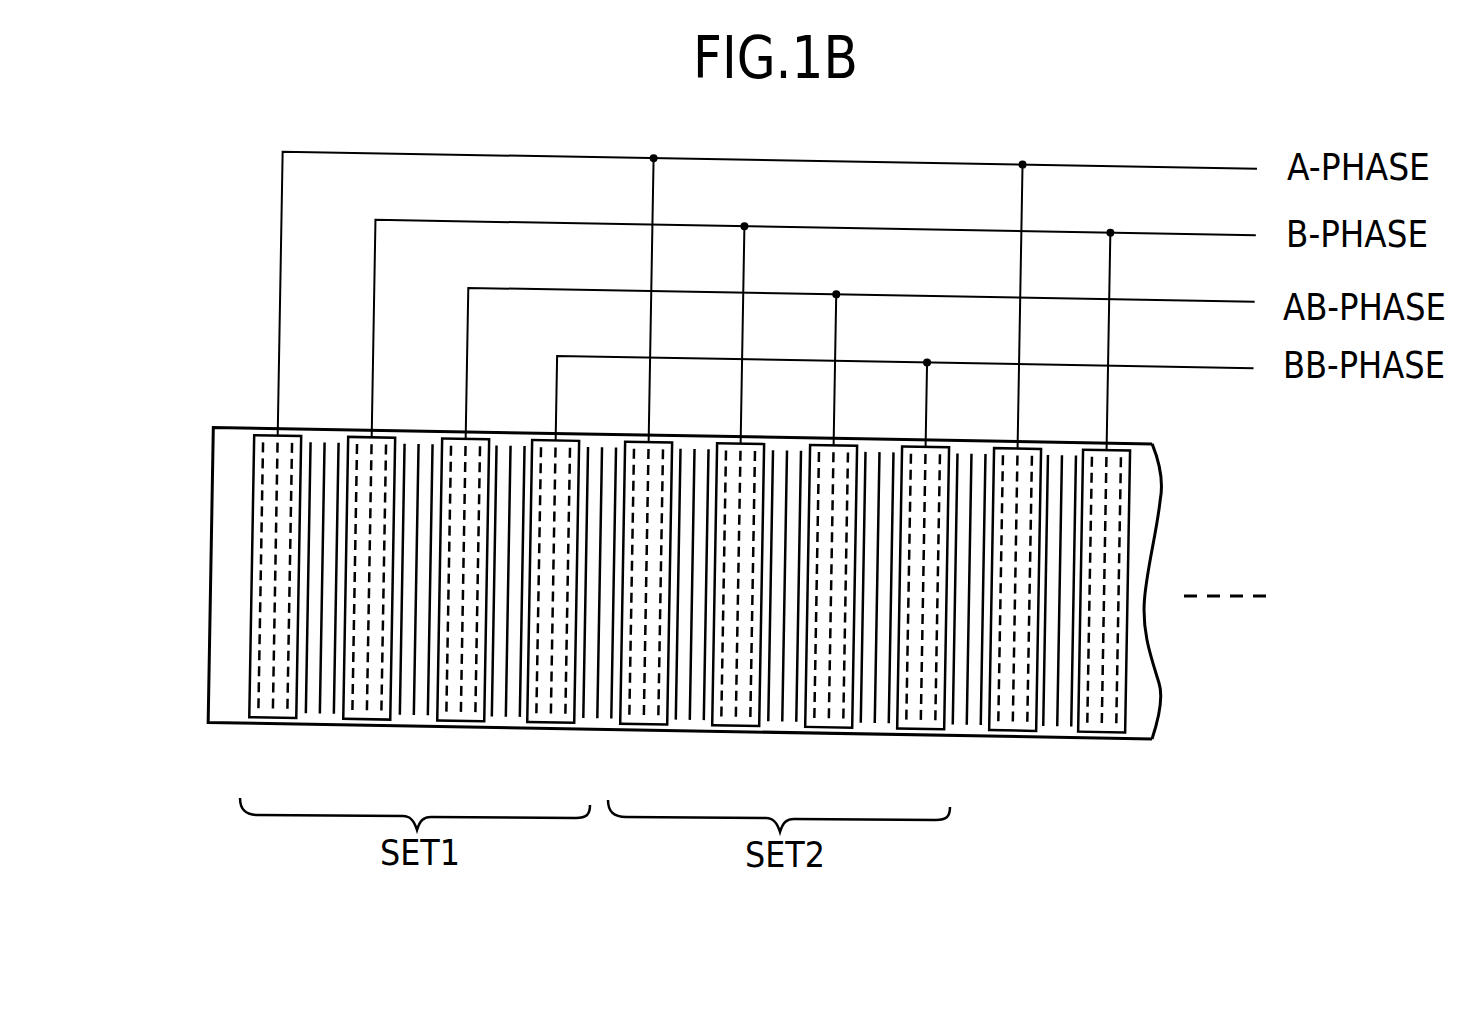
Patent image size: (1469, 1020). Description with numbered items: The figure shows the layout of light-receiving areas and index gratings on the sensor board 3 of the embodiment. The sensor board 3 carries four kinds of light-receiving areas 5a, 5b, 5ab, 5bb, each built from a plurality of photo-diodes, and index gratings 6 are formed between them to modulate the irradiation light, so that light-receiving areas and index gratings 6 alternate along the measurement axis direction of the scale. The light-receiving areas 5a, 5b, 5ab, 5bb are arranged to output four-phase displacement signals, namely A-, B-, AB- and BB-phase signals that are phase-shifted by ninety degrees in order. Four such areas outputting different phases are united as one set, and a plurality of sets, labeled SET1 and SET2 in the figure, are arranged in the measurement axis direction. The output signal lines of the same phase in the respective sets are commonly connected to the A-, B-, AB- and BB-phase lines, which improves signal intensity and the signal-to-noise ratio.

The sensor board 3 is at (195, 417).
The light-receiving area 5a is at (274, 713).
The light-receiving area 5b is at (368, 715).
The light-receiving area 5ab is at (462, 716).
The light-receiving area 5bb is at (552, 718).
The index gratings 6 is at (327, 437).